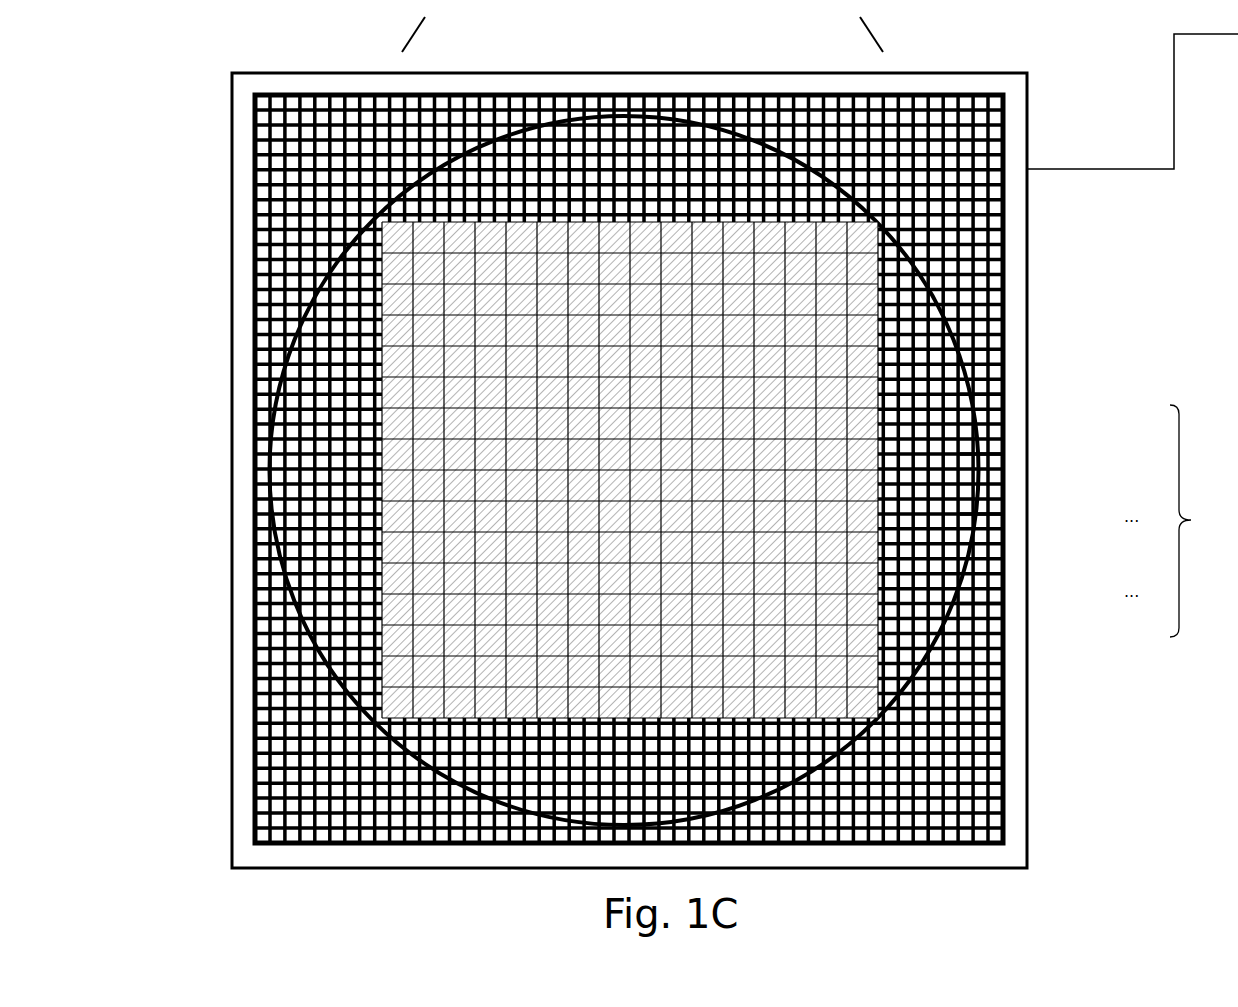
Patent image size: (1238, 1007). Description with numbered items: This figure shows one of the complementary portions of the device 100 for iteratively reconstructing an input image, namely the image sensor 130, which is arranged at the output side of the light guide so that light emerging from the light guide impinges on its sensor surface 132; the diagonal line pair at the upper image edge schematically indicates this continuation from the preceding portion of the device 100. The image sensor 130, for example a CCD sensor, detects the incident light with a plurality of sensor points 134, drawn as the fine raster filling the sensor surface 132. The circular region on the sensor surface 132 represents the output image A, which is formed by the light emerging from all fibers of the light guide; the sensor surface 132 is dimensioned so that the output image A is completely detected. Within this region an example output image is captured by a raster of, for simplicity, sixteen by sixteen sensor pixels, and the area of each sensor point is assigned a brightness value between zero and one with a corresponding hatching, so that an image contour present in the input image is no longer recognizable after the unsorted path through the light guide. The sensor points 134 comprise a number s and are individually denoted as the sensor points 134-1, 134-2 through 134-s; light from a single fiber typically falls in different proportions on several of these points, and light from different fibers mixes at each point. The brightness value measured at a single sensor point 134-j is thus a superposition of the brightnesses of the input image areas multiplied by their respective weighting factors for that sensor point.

The device 100 is at (1131, 40).
The image sensor 130 is at (277, 73).
The sensor surface 132 is at (256, 224).
The sensor points 134 is at (1202, 521).
The first sensor point 134-1 is at (1001, 395).
The second sensor point 134-2 is at (1001, 450).
The j-th sensor point 134-j is at (1001, 515).
The s-th sensor point 134-s is at (1001, 602).
The output image A is at (281, 558).